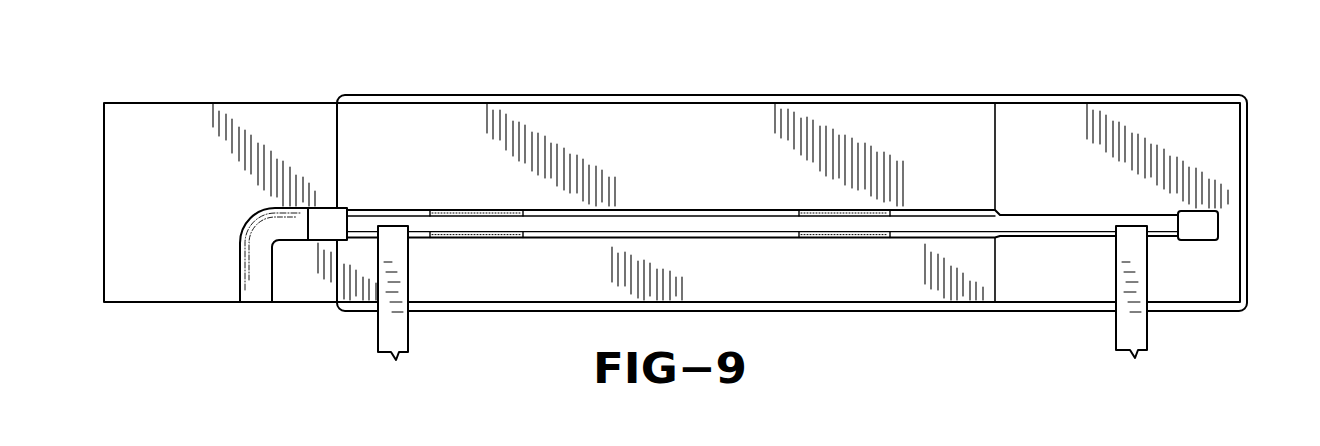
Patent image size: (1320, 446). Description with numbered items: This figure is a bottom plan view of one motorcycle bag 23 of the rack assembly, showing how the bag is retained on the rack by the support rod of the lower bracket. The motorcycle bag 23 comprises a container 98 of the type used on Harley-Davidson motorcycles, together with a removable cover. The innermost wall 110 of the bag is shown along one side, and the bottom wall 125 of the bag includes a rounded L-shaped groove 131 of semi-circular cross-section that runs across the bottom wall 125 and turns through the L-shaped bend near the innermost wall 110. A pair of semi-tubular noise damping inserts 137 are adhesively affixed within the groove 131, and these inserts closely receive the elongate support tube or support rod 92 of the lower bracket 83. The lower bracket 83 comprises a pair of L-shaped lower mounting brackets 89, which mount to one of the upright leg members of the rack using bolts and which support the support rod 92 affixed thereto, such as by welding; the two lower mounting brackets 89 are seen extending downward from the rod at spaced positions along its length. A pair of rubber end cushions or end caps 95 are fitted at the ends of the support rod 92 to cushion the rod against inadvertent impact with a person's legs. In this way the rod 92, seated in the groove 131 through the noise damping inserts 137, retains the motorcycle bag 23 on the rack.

The motorcycle bag 23 is at (860, 88).
The container 98 is at (960, 95).
The bottom wall 125 is at (647, 129).
The innermost wall 110 is at (186, 304).
The support rod 92 is at (693, 220).
The noise damping insert 137 is at (462, 212).
The end cap 95 is at (333, 218).
The groove 131 is at (263, 235).
The lower mounting bracket 89 is at (377, 322).
The lower bracket 83 is at (418, 337).